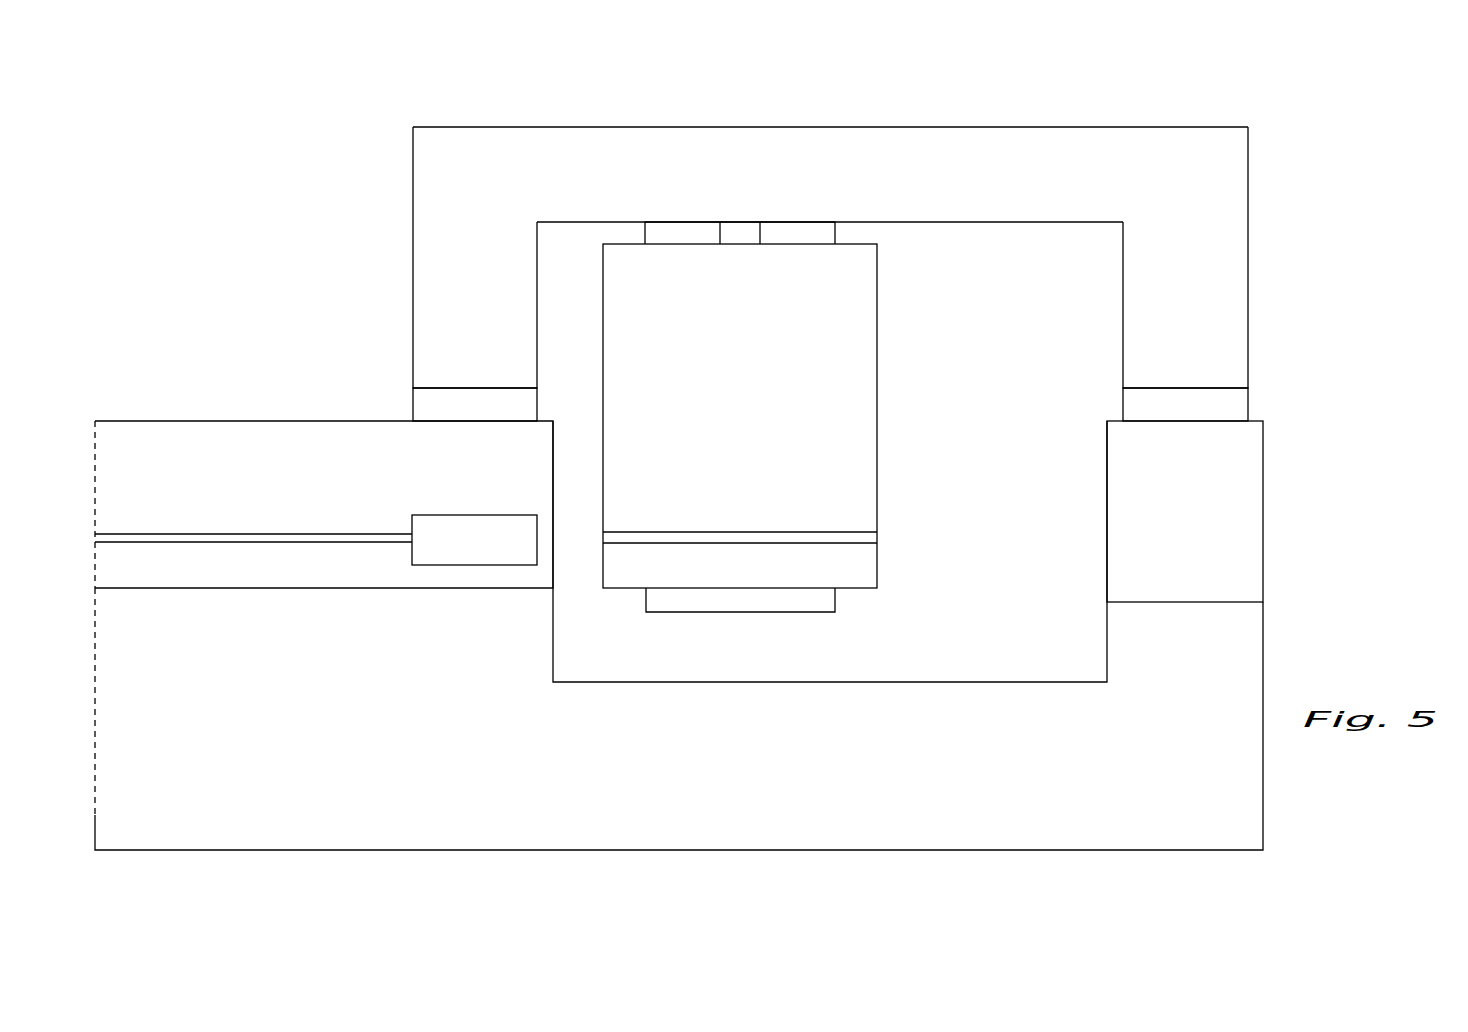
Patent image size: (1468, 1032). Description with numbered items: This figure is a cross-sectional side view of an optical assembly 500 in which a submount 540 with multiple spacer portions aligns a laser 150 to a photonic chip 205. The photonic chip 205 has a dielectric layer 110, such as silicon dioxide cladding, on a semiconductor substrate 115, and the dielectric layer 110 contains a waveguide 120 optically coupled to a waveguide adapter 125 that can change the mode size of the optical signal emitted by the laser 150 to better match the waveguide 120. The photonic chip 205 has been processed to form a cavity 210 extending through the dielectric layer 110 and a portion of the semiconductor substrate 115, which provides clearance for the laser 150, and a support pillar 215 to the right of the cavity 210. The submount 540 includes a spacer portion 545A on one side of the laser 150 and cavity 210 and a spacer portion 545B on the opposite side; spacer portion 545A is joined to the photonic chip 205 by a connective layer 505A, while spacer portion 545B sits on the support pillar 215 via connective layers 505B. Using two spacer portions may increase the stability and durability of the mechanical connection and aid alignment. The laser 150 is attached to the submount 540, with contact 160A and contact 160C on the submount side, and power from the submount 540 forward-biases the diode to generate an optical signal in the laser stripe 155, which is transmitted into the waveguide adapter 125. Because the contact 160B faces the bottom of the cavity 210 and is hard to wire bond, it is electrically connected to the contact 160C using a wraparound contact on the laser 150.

The optical assembly 500 is at (463, 57).
The submount 540 is at (423, 200).
The spacer portion 545A is at (420, 327).
The spacer portion 545B is at (1240, 327).
The connective layer 505A is at (420, 405).
The connective layers 505B is at (1235, 405).
The laser 150 is at (850, 313).
The laser stripe 155 is at (740, 530).
The contact 160A is at (665, 230).
The contact 160B is at (715, 603).
The contact 160C is at (815, 228).
The cavity 210 is at (985, 481).
The photonic chip 205 is at (1212, 868).
The dielectric layer 110 is at (320, 573).
The waveguide 120 is at (368, 533).
The waveguide adapter 125 is at (457, 525).
The support pillar 215 is at (1247, 487).
The semiconductor substrate 115 is at (578, 852).